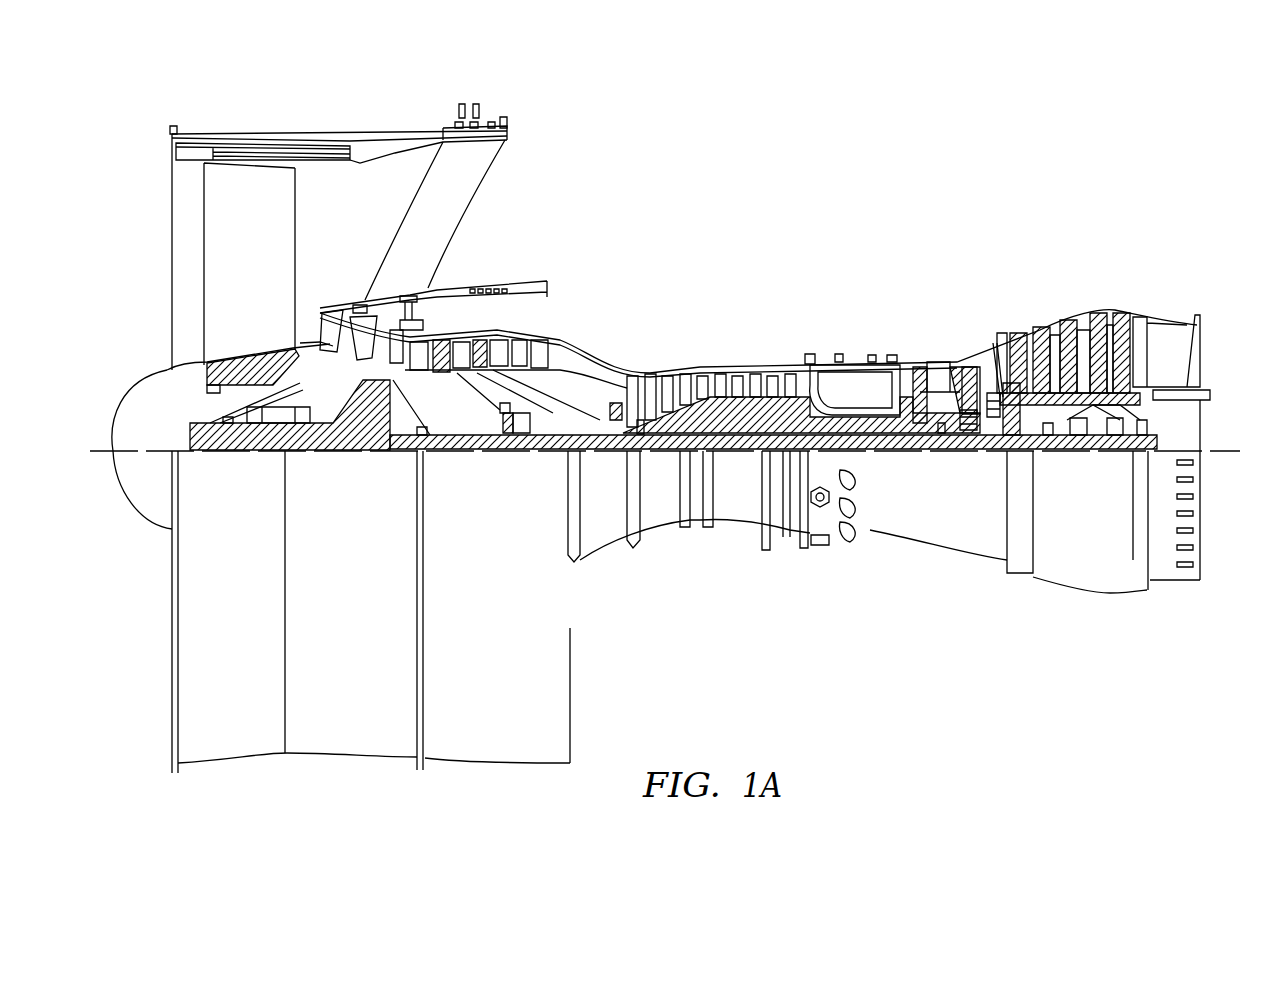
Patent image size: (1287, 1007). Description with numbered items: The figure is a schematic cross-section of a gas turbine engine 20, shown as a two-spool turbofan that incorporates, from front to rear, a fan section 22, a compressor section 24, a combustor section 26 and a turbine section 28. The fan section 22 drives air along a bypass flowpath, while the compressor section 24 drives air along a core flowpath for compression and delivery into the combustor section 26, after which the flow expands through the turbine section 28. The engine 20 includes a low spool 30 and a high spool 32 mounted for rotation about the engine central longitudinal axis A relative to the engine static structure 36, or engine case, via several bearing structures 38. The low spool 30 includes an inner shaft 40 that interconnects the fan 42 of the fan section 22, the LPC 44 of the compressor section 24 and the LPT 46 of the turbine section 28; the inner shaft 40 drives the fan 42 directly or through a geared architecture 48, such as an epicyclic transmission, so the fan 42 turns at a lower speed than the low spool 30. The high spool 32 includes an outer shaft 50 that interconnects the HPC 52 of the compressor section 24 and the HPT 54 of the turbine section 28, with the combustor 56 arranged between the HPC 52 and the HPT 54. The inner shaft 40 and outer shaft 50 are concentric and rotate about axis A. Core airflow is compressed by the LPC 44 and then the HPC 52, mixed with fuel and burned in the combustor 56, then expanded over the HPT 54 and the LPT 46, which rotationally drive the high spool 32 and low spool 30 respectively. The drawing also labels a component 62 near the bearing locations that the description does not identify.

The gas turbine engine 20 is at (1050, 161).
The fan section 22 is at (165, 115).
The compressor section 24 is at (686, 377).
The combustor section 26 is at (862, 304).
The turbine section 28 is at (1040, 393).
The low spool 30 is at (742, 454).
The high spool 32 is at (801, 378).
The engine static structure 36 is at (788, 544).
The bearing structures 38 is at (1005, 314).
The inner shaft 40 is at (598, 455).
The fan 42 is at (262, 256).
The low pressure compressor 44 is at (488, 343).
The low pressure turbine 46 is at (920, 248).
The geared architecture 48 is at (376, 445).
The outer shaft 50 is at (863, 435).
The high pressure compressor 52 is at (722, 412).
The high pressure turbine 54 is at (942, 427).
The combustor 56 is at (862, 385).
The bearing support structure 62 is at (641, 448).
The engine central longitudinal axis A is at (1240, 450).